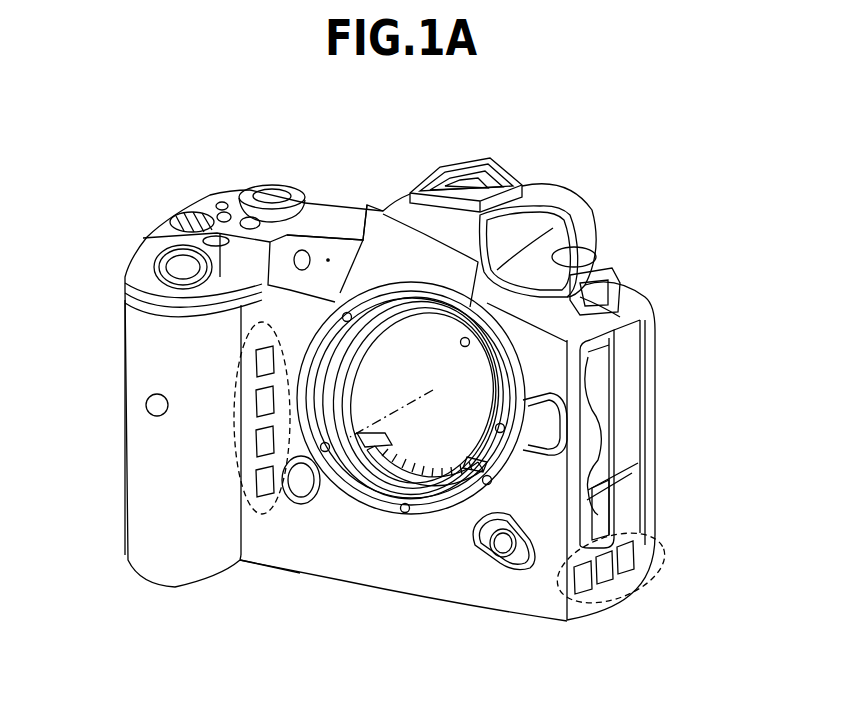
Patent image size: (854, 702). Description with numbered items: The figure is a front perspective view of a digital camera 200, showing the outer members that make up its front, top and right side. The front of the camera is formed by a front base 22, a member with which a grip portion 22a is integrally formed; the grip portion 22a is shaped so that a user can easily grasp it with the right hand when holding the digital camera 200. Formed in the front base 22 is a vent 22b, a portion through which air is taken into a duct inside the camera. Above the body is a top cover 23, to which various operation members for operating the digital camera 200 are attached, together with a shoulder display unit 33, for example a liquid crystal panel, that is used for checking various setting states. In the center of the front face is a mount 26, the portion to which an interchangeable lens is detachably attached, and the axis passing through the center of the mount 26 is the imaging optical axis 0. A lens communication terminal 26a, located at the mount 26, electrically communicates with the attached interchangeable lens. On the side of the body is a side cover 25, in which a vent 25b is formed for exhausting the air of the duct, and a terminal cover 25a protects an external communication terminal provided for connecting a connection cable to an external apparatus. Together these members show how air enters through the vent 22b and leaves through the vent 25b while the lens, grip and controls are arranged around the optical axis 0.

The digital camera 200 is at (485, 130).
The top cover 23 is at (518, 227).
The shoulder display unit 33 is at (338, 220).
The front base 22 is at (305, 557).
The grip portion 22a is at (132, 487).
The vent 22b is at (247, 507).
The mount 26 is at (430, 513).
The lens communication terminal 26a is at (445, 500).
The imaging optical axis 0 is at (392, 478).
The side cover 25 is at (625, 513).
The terminal cover 25a is at (597, 470).
The vent 25b is at (590, 603).